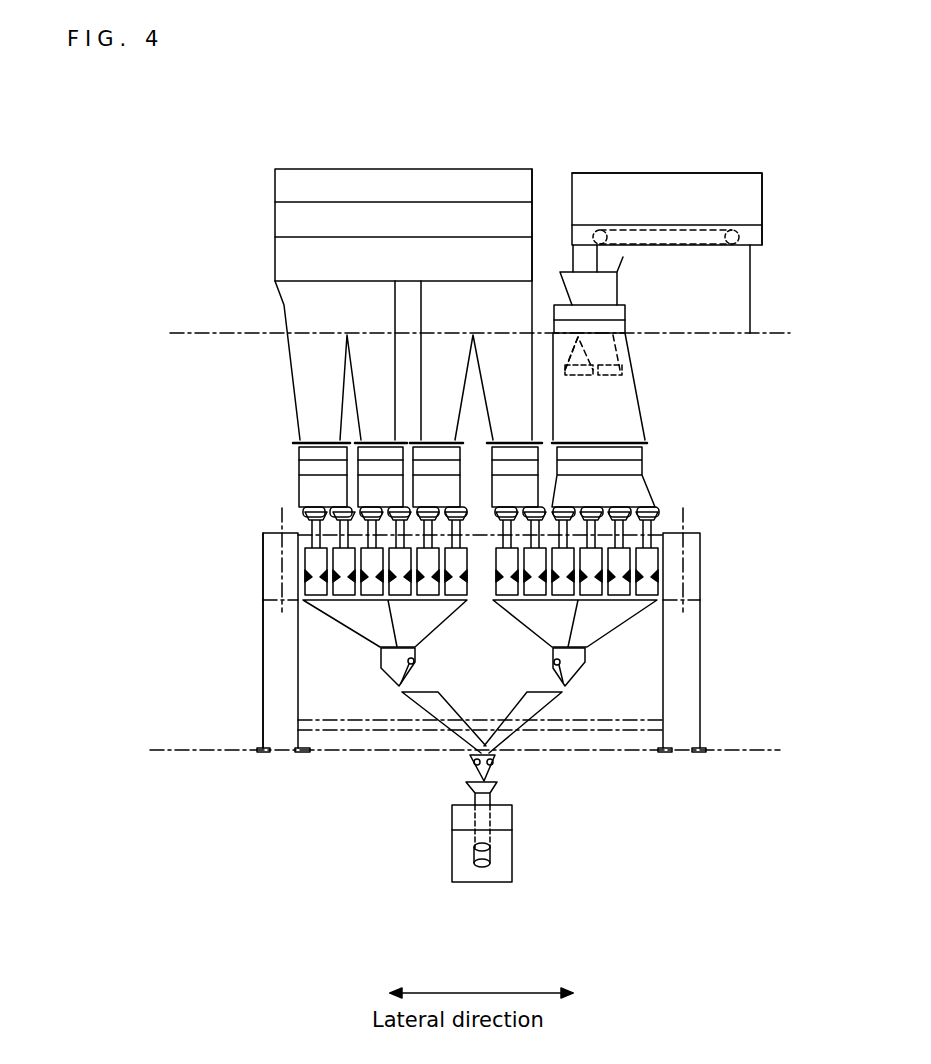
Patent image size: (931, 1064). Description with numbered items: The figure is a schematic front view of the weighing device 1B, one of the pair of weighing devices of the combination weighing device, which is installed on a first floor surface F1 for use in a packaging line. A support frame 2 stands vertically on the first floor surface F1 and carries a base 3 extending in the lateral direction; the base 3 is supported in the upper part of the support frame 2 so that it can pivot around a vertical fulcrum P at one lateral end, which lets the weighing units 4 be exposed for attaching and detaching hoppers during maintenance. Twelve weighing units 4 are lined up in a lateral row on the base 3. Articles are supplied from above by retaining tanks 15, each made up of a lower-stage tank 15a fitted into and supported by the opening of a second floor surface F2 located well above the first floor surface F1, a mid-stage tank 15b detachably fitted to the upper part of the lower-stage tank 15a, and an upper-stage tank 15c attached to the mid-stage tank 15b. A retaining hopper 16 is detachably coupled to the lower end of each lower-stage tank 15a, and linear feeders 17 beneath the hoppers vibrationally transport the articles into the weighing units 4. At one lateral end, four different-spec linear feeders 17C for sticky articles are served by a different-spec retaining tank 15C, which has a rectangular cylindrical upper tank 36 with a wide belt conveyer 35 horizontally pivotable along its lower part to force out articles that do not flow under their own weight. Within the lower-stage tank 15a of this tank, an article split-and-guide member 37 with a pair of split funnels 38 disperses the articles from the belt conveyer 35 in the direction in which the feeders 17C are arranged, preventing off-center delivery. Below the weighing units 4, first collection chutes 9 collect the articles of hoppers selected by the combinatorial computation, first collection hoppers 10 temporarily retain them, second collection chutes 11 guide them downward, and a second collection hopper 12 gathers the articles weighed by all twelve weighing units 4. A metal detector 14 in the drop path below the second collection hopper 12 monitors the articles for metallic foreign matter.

The weighing device 1B is at (208, 463).
The support frame 2 is at (263, 700).
The base 3 is at (660, 528).
The weighing unit 4 is at (312, 561).
The first collection chute 9 is at (345, 628).
The first collection hopper 10 is at (385, 675).
The second collection chute 11 is at (450, 698).
The second collection hopper 12 is at (497, 762).
The metal detector 14 is at (512, 858).
The retaining tank 15 is at (444, 275).
The different-spec retaining tank 15C is at (651, 279).
The lower-stage tank 15a is at (300, 382).
The mid-stage tank 15b is at (288, 312).
The upper-stage tank 15c is at (275, 222).
The retaining hopper 16 is at (299, 492).
The linear feeder 17 is at (503, 507).
The different-spec linear feeder 17C is at (622, 507).
The belt conveyer 35 is at (740, 226).
The upper tank 36 is at (762, 192).
The article split-and-guide member 37 is at (618, 353).
The split funnel 38 is at (567, 356).
The fulcrum P is at (282, 605).
The first floor surface F1 is at (175, 750).
The second floor surface F2 is at (187, 333).